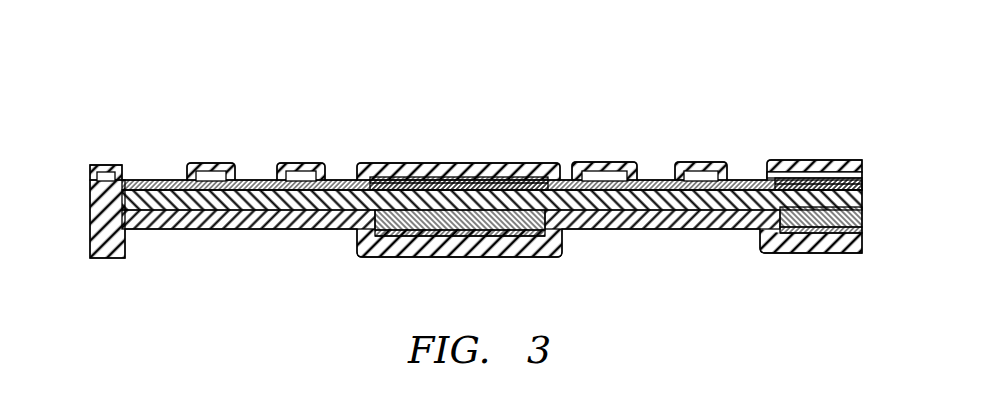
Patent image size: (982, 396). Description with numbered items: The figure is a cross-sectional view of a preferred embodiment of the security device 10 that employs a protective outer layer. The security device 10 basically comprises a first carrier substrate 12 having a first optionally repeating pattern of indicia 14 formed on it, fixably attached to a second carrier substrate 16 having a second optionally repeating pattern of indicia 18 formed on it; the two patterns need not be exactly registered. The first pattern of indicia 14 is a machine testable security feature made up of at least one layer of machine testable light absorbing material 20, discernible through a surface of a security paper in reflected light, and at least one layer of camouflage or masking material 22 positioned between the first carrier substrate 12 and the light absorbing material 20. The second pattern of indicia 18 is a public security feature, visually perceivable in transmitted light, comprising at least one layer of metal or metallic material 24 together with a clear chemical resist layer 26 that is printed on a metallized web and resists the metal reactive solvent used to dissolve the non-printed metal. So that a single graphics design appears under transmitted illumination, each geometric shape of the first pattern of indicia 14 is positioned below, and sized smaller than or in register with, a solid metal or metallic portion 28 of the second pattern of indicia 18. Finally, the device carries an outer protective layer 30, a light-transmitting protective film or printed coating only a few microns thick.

The security device 10 is at (215, 118).
The first carrier substrate 12 is at (862, 247).
The first optionally repeating pattern of indicia 14 is at (362, 233).
The second carrier substrate 16 is at (862, 195).
The second optionally repeating pattern of indicia 18 is at (867, 178).
The light absorbing material 20 is at (562, 231).
The camouflage or masking material 22 is at (455, 257).
The metal or metallic material layer 24 is at (398, 173).
The clear chemical resist layer 26 is at (475, 177).
The solid metal or metallic portion 28 is at (360, 177).
The outer protective layer 30 is at (855, 168).